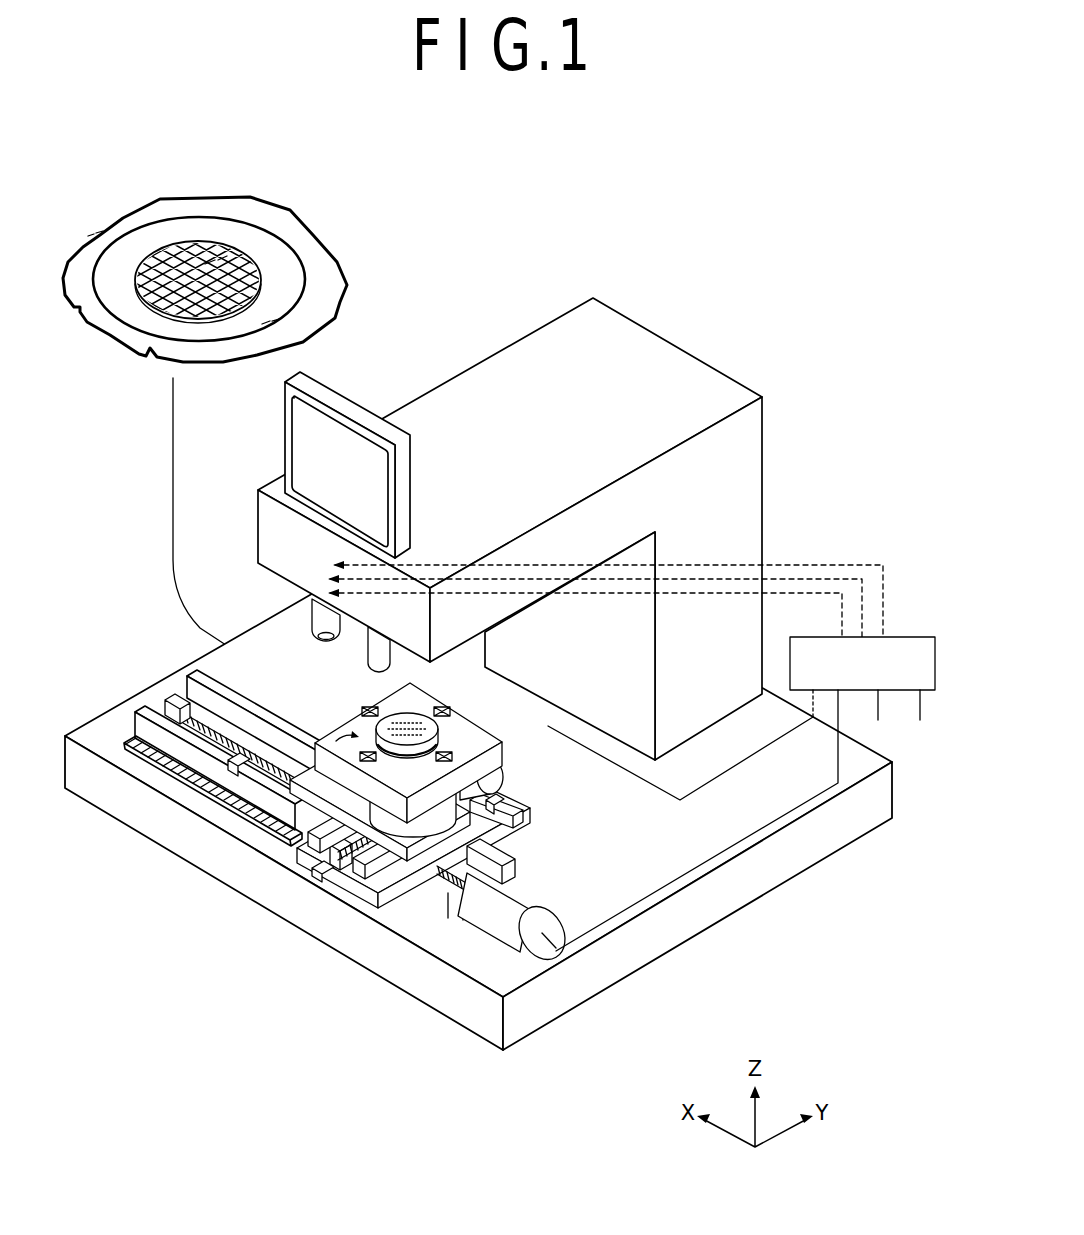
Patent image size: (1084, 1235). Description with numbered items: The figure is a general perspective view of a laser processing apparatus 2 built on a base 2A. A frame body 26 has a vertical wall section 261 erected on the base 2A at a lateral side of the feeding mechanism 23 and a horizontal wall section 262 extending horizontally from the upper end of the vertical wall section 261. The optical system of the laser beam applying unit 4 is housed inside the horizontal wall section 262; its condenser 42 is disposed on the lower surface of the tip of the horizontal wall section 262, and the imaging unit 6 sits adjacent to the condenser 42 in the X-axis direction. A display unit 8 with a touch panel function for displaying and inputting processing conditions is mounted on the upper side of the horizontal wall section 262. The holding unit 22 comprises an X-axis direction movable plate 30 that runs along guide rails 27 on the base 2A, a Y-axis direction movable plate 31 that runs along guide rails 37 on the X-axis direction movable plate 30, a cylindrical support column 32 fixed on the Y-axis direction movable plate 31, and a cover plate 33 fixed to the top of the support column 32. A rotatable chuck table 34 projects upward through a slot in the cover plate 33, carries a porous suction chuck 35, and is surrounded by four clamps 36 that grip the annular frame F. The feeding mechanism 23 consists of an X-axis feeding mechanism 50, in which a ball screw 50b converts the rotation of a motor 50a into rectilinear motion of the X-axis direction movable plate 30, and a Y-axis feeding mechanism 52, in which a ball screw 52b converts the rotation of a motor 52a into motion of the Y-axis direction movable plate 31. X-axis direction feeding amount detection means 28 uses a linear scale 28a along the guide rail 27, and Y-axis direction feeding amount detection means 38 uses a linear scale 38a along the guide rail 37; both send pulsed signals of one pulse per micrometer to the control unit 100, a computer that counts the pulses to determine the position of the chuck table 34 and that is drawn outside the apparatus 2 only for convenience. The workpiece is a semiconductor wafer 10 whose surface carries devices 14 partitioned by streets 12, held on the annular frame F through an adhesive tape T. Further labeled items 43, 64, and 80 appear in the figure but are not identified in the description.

The laser processing apparatus 2 is at (571, 529).
The base 2A is at (520, 975).
The laser beam applying unit 4 is at (291, 619).
The imaging unit 6 is at (405, 663).
The display unit 8 is at (283, 433).
The semiconductor wafer 10 is at (203, 274).
The streets 12 is at (160, 254).
The devices 14 is at (240, 256).
The adhesive tape T is at (110, 262).
The annular frame F is at (315, 257).
The holding unit 22 is at (118, 897).
The feeding mechanism 23 is at (655, 787).
The frame body 26 is at (571, 529).
The vertical wall section 261 is at (755, 475).
The horizontal wall section 262 is at (668, 424).
The guide rails 27 is at (190, 677).
The X-axis direction feeding amount detection means 28 is at (154, 766).
The linear scale 28a is at (190, 780).
The X-axis direction movable plate 30 is at (383, 855).
The Y-axis direction movable plate 31 is at (432, 882).
The support column 32 is at (415, 865).
The cover plate 33 is at (392, 866).
The chuck table 34 is at (234, 768).
The suction chuck 35 is at (285, 812).
The clamps 36 is at (335, 858).
The guide rails 37 is at (312, 842).
The Y-axis direction feeding amount detection means 38 is at (464, 916).
The linear scale 38a is at (513, 832).
The condenser 42 is at (318, 621).
The signal line 43 is at (330, 592).
The X-axis feeding mechanism 50 is at (548, 903).
The motor 50a is at (513, 887).
The ball screw 50b is at (505, 850).
The Y-axis feeding mechanism 52 is at (549, 795).
The motor 52a is at (492, 781).
The ball screw 52b is at (518, 813).
The signal line 64 is at (335, 562).
The signal line 80 is at (330, 578).
The control unit 100 is at (900, 633).